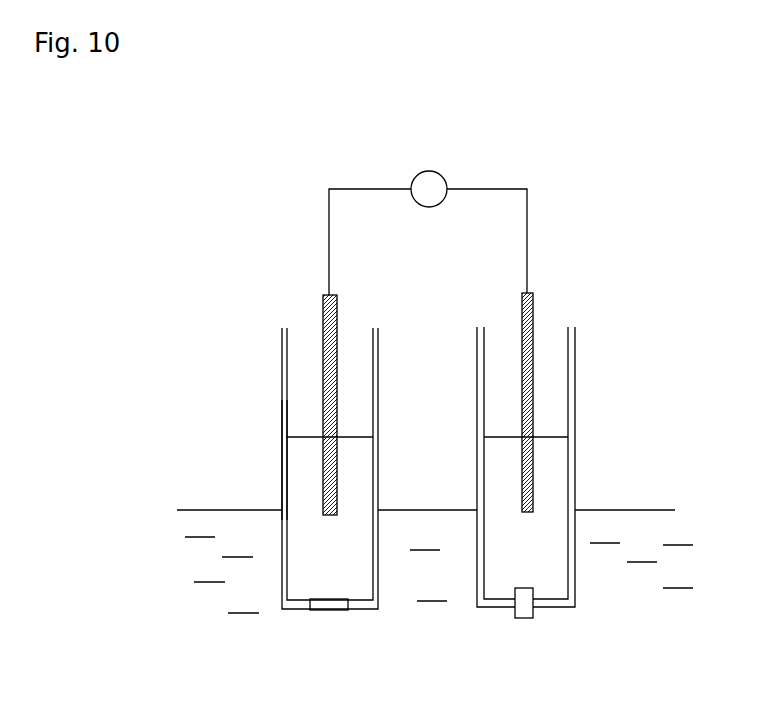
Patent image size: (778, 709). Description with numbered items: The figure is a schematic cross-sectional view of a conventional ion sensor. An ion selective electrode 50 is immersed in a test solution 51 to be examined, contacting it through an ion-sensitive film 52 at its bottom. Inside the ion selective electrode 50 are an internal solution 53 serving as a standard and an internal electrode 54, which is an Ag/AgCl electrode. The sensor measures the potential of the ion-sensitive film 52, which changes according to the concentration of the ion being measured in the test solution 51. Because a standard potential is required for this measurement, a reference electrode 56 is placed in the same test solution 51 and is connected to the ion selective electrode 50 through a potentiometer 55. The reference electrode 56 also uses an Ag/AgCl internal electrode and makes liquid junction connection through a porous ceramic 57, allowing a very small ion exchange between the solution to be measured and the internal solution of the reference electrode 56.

The ion selective electrode 50 is at (278, 346).
The test solution 51 is at (603, 510).
The ion-sensitive film 52 is at (330, 606).
The internal solution 53 is at (290, 485).
The electrode 54 is at (337, 473).
The potentiometer 55 is at (447, 178).
The reference electrode 56 is at (578, 339).
The porous ceramic 57 is at (533, 618).